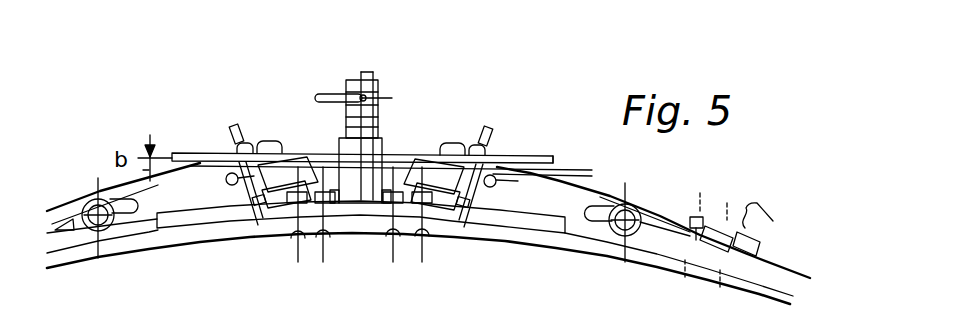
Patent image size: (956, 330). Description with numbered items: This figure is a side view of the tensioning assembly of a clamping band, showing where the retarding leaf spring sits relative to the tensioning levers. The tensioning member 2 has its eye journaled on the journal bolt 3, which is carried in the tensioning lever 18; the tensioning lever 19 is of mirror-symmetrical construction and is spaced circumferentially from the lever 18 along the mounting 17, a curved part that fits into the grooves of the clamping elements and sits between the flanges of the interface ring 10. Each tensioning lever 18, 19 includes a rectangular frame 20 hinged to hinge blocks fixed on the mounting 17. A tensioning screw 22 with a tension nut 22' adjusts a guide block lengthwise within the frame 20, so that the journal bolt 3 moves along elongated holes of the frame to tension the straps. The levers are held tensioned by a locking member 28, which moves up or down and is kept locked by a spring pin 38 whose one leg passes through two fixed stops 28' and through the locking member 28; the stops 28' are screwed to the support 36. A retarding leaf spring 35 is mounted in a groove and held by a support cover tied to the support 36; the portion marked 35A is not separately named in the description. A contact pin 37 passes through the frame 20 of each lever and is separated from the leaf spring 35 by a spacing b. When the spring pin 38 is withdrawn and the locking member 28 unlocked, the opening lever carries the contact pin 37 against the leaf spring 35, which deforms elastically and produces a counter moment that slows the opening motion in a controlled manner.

The tensioning member 2 is at (83, 262).
The journal bolt 3 is at (133, 252).
The interface ring 10 is at (473, 232).
The mounting 17 is at (180, 220).
The tensioning lever 18 is at (194, 202).
The tensioning lever 19 is at (545, 205).
The rectangular frame 20 is at (203, 161).
The tensioning screw 22 is at (361, 131).
The tension nut 22' is at (350, 141).
The locking member 28 is at (369, 105).
The fixed stops 28' is at (395, 73).
The retarding leaf spring element 35 is at (213, 153).
The cross bar end 35A is at (513, 158).
The support 36 is at (348, 170).
The contact pin 37 is at (226, 180).
The spring pin 38 is at (323, 98).